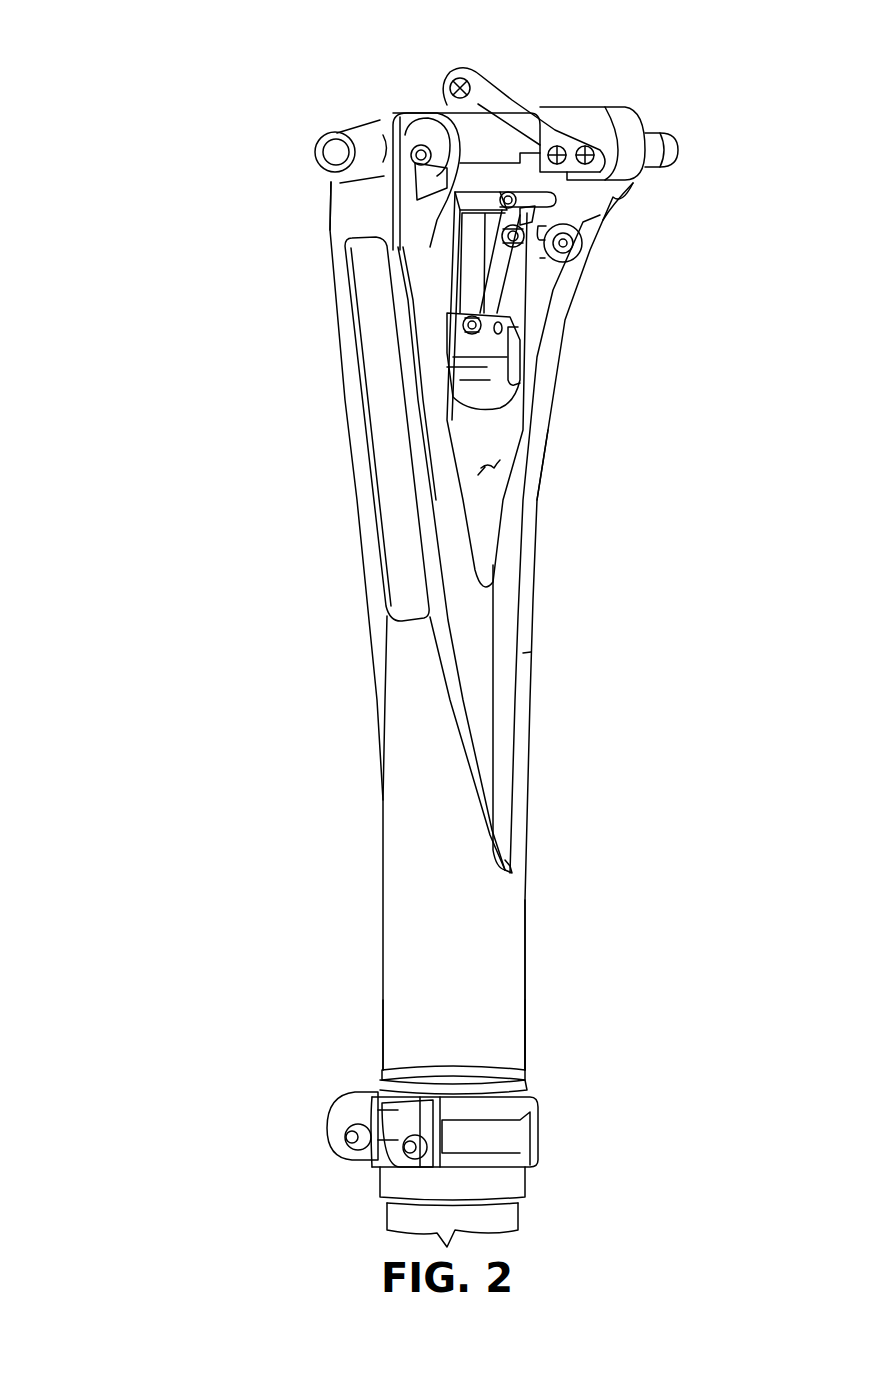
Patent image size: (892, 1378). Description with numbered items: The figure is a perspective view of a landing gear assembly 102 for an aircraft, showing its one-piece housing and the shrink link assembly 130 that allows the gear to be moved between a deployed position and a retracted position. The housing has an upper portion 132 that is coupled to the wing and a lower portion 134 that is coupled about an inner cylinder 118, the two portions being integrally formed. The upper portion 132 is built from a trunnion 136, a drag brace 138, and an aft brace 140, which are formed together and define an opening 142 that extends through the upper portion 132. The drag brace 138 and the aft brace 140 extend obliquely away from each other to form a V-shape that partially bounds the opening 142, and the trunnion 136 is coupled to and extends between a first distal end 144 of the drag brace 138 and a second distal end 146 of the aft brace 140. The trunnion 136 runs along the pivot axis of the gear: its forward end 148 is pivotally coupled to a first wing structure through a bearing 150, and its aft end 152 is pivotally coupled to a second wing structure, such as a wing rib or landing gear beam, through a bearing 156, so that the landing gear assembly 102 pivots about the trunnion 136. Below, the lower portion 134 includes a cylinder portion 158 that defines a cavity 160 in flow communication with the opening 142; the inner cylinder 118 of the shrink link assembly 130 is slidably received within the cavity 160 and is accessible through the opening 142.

The landing gear assembly 102 is at (165, 88).
The inner cylinder 118 is at (493, 1215).
The shrink link assembly 130 is at (518, 343).
The upper portion 132 is at (580, 365).
The lower portion 134 is at (622, 710).
The trunnion 136 is at (458, 118).
The drag brace 138 is at (363, 252).
The aft brace 140 is at (560, 290).
The opening 142 is at (440, 243).
The first distal end 144 is at (340, 203).
The second distal end 146 is at (590, 220).
The forward end 148 is at (365, 115).
The bearing 150 is at (330, 148).
The aft end 152 is at (632, 110).
The bearing 156 is at (668, 140).
The cylinder portion 158 is at (527, 903).
The cavity 160 is at (485, 467).